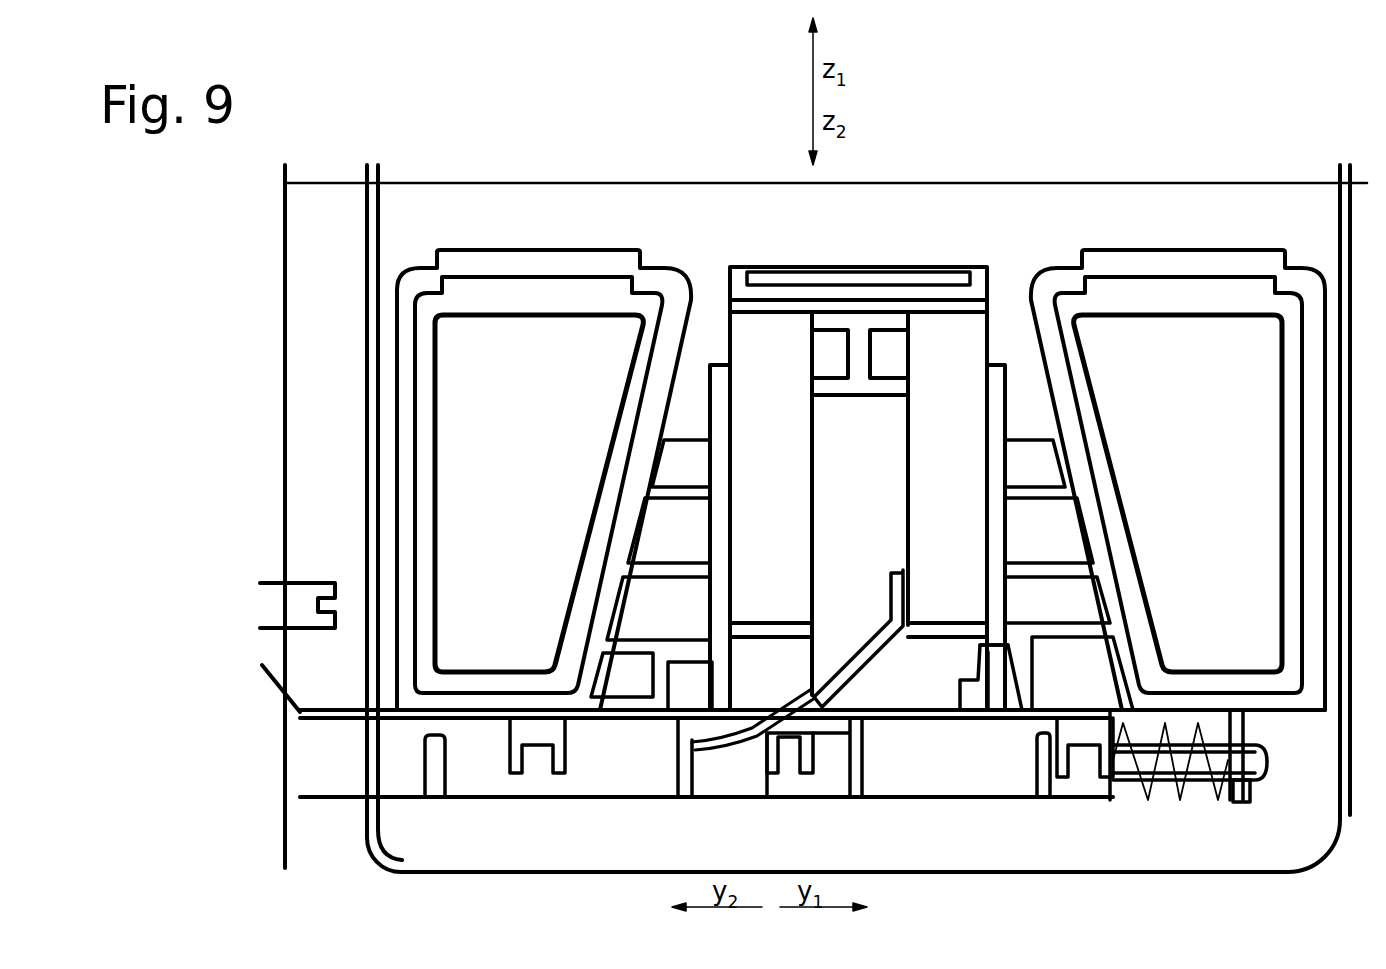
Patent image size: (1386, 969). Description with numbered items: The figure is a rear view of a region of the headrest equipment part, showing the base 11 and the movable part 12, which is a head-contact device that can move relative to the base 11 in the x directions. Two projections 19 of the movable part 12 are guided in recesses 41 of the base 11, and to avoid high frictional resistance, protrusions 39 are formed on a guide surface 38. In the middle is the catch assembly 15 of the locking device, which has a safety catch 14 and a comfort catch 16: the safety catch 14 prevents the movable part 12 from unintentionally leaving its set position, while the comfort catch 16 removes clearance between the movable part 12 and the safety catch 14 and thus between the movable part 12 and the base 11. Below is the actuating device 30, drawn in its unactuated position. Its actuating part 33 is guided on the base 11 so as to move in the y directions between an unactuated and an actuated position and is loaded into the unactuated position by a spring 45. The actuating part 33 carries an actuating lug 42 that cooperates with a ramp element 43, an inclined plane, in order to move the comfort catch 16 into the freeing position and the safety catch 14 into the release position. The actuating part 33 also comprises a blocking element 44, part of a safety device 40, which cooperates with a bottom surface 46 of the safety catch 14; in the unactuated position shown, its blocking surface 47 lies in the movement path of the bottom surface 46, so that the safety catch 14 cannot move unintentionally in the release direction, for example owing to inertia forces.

The base 11 is at (1172, 265).
The movable part 12 is at (630, 300).
The safety catch 14 is at (962, 365).
The catch assembly 15 is at (994, 239).
The comfort catch 16 is at (868, 430).
The projections 19 is at (520, 343).
The actuating device 30 is at (595, 778).
The actuating part 33 is at (485, 772).
The guide surface 38 is at (1300, 343).
The protrusions 39 is at (1290, 407).
The safety device 40 is at (994, 747).
The recesses 41 is at (593, 271).
The actuating lug 42 is at (748, 745).
The ramp element 43 is at (869, 683).
The blocking element 44 is at (1000, 690).
The spring 45 is at (1180, 795).
The bottom surface 46 is at (932, 639).
The blocking surface 47 is at (998, 629).